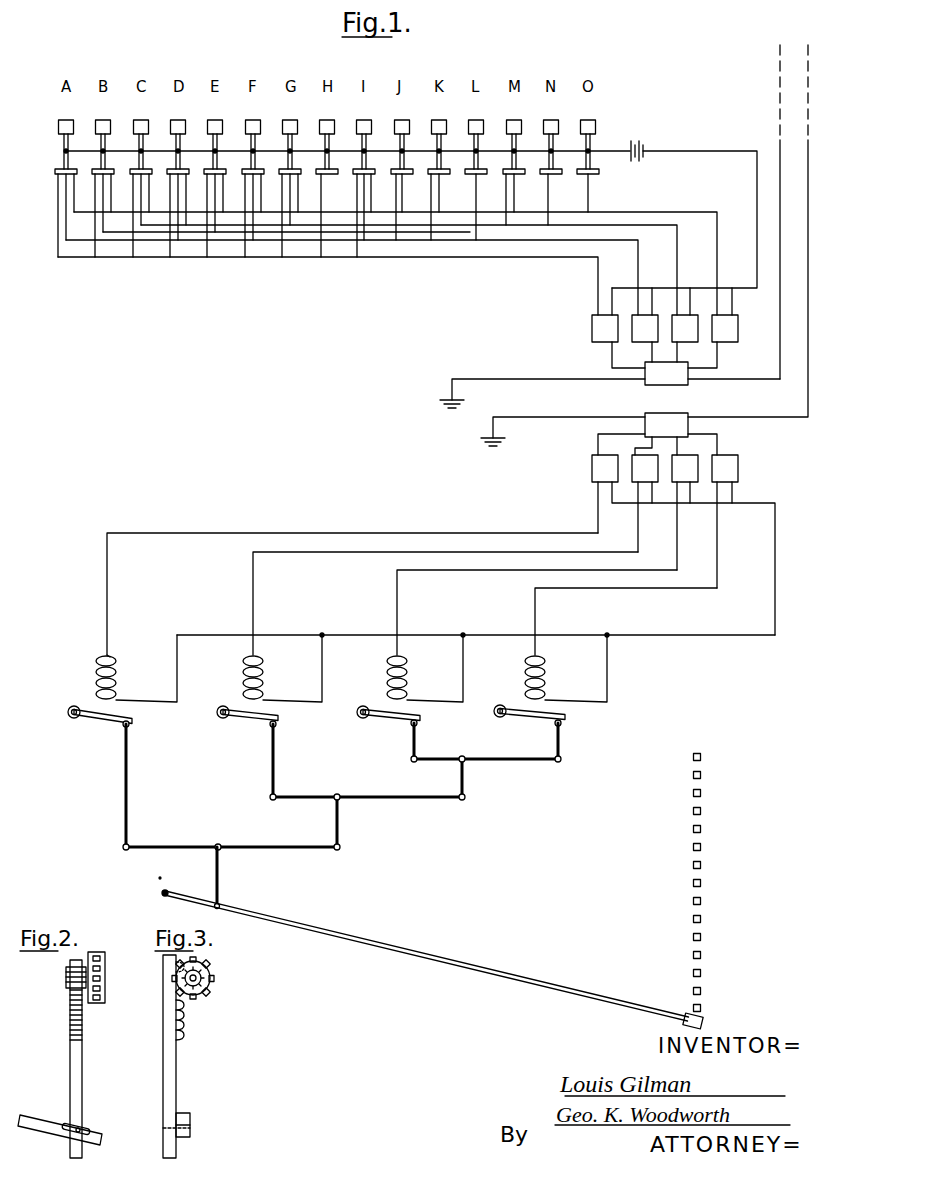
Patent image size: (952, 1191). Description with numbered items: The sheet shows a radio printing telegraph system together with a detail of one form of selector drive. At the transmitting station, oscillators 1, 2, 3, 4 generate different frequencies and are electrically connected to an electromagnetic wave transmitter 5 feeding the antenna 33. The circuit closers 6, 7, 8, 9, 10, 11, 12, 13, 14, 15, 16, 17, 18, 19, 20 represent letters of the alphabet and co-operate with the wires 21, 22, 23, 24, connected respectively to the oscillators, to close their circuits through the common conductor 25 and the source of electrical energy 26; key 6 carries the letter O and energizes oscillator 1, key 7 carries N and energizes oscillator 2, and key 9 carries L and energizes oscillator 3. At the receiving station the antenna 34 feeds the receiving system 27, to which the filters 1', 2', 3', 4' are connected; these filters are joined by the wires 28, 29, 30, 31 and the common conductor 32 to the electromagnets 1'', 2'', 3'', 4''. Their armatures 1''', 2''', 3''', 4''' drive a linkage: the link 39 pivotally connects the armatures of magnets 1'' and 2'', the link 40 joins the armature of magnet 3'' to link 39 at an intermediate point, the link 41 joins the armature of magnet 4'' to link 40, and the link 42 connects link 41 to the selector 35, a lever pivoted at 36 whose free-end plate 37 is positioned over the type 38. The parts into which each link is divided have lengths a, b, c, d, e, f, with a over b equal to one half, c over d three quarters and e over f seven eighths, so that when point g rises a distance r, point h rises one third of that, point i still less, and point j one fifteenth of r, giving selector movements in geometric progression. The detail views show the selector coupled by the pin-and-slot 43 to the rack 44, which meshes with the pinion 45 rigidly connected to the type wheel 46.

In FIG. 1, the oscillator 1 is at (713, 341).
In FIG. 1, the oscillator 2 is at (685, 338).
In FIG. 1, the oscillator 3 is at (645, 338).
In FIG. 1, the oscillator 4 is at (618, 341).
In FIG. 1, the electromagnetic wave transmitter 5 is at (610, 385).
In FIG. 1, the circuit closer 6 is at (596, 120).
In FIG. 1, the circuit closer 7 is at (556, 120).
In FIG. 1, the circuit closer 8 is at (519, 120).
In FIG. 1, the circuit closer 9 is at (481, 120).
In FIG. 1, the circuit closer 10 is at (447, 115).
In FIG. 1, the circuit closer 11 is at (410, 115).
In FIG. 1, the circuit closer 12 is at (372, 115).
In FIG. 1, the circuit closer 13 is at (335, 115).
In FIG. 1, the circuit closer 14 is at (298, 115).
In FIG. 1, the circuit closer 15 is at (261, 115).
In FIG. 1, the circuit closer 16 is at (223, 115).
In FIG. 1, the circuit closer 17 is at (186, 115).
In FIG. 1, the circuit closer 18 is at (149, 115).
In FIG. 1, the circuit closer 19 is at (111, 115).
In FIG. 1, the circuit closer 20 is at (74, 115).
In FIG. 1, the wire 21 is at (680, 216).
In FIG. 1, the wire 22 is at (680, 253).
In FIG. 1, the wire 23 is at (641, 263).
In FIG. 1, the wire 24 is at (601, 277).
In FIG. 1, the common conductor 25 is at (671, 151).
In FIG. 1, the source of electrical energy 26 is at (639, 140).
In FIG. 1, the electromagnetic-wave-receiving system 27 is at (680, 430).
In FIG. 1, the wire 28 is at (677, 588).
In FIG. 1, the wire 29 is at (677, 555).
In FIG. 1, the wire 30 is at (638, 540).
In FIG. 1, the wire 31 is at (598, 527).
In FIG. 1, the common conductor 32 is at (715, 635).
In FIG. 1, the antenna 33 is at (780, 101).
In FIG. 1, the antenna 34 is at (808, 133).
In FIG. 1, the selector 35 is at (441, 959).
In FIG. 2, the selector 35 is at (35, 1118).
In FIG. 3, the selector 35 is at (192, 1120).
In FIG. 1, the pivot 36 is at (171, 883).
In FIG. 1, the plate 37 is at (703, 1023).
In FIG. 1, the type 38 is at (692, 795).
In FIG. 1, the link 39 is at (490, 760).
In FIG. 1, the link 40 is at (383, 798).
In FIG. 1, the link 41 is at (280, 848).
In FIG. 1, the link 42 is at (222, 898).
In FIG. 2, the pin-and-slot 43 is at (86, 1130).
In FIG. 2, the rack 44 is at (82, 1047).
In FIG. 3, the rack 44 is at (177, 1068).
In FIG. 2, the pinion 45 is at (66, 977).
In FIG. 3, the pinion 45 is at (204, 983).
In FIG. 2, the type wheel 46 is at (106, 985).
In FIG. 3, the type wheel 46 is at (212, 970).
In FIG. 1, the filter 1' is at (725, 521).
In FIG. 1, the filter 2' is at (685, 512).
In FIG. 1, the filter 3' is at (645, 503).
In FIG. 1, the filter 4' is at (683, 545).
In FIG. 1, the electromagnet 1'' is at (566, 668).
In FIG. 1, the electromagnet 2'' is at (425, 668).
In FIG. 1, the electromagnet 3'' is at (282, 668).
In FIG. 1, the electromagnet 4'' is at (136, 668).
In FIG. 1, the armature 1''' is at (529, 721).
In FIG. 1, the armature 2''' is at (388, 728).
In FIG. 1, the armature 3''' is at (247, 733).
In FIG. 1, the armature 4''' is at (100, 729).
In FIG. 1, the link part length a is at (438, 750).
In FIG. 1, the link part length b is at (510, 750).
In FIG. 1, the link part length c is at (305, 788).
In FIG. 1, the link part length d is at (399, 787).
In FIG. 1, the link part length e is at (172, 836).
In FIG. 1, the link part length f is at (277, 835).
In FIG. 1, the point g is at (561, 772).
In FIG. 1, the point h is at (465, 809).
In FIG. 1, the point i is at (337, 857).
In FIG. 1, the point j is at (220, 917).